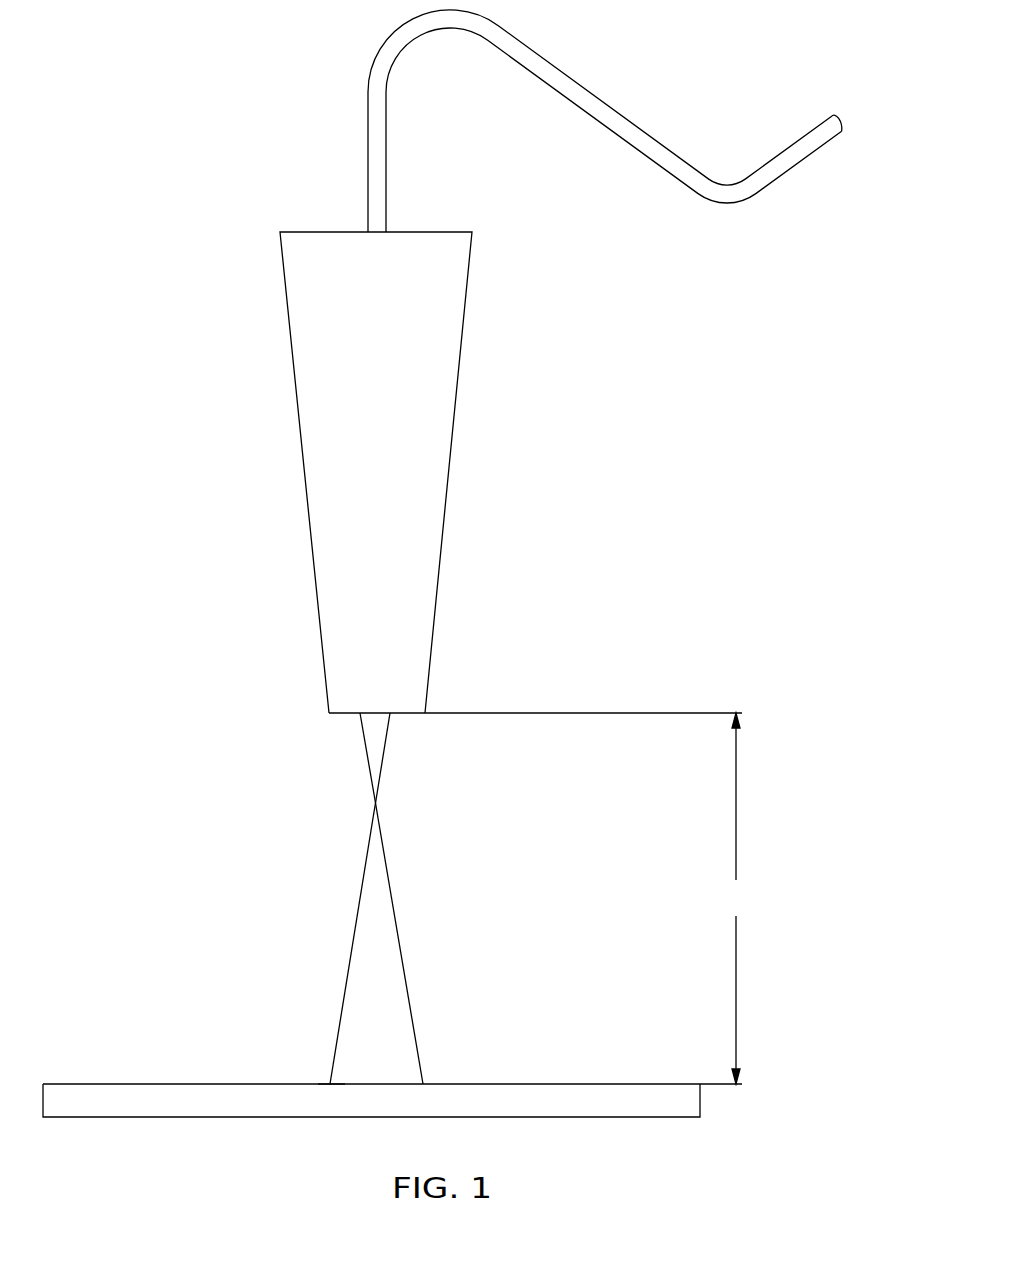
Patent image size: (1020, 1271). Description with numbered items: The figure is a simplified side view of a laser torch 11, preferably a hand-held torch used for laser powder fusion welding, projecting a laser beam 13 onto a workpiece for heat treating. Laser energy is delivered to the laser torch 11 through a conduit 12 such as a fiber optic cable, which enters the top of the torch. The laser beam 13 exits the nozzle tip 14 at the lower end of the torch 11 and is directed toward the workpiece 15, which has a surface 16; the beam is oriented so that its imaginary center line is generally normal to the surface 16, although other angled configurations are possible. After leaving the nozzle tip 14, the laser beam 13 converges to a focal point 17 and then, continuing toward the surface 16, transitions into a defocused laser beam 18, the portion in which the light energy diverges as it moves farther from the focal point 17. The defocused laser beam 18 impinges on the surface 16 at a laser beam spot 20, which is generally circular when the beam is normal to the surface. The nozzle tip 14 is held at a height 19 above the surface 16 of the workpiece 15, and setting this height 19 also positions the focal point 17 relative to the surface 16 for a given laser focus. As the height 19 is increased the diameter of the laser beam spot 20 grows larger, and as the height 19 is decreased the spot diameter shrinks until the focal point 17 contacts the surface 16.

The laser torch 11 is at (454, 425).
The conduit 12 is at (367, 162).
The laser beam 13 is at (384, 757).
The nozzle tip 14 is at (344, 717).
The workpiece 15 is at (703, 1097).
The surface 16 is at (548, 1083).
The focal point 17 is at (378, 807).
The defocused laser beam 18 is at (347, 966).
The height 19 is at (589, 898).
The laser beam spot 20 is at (329, 1083).